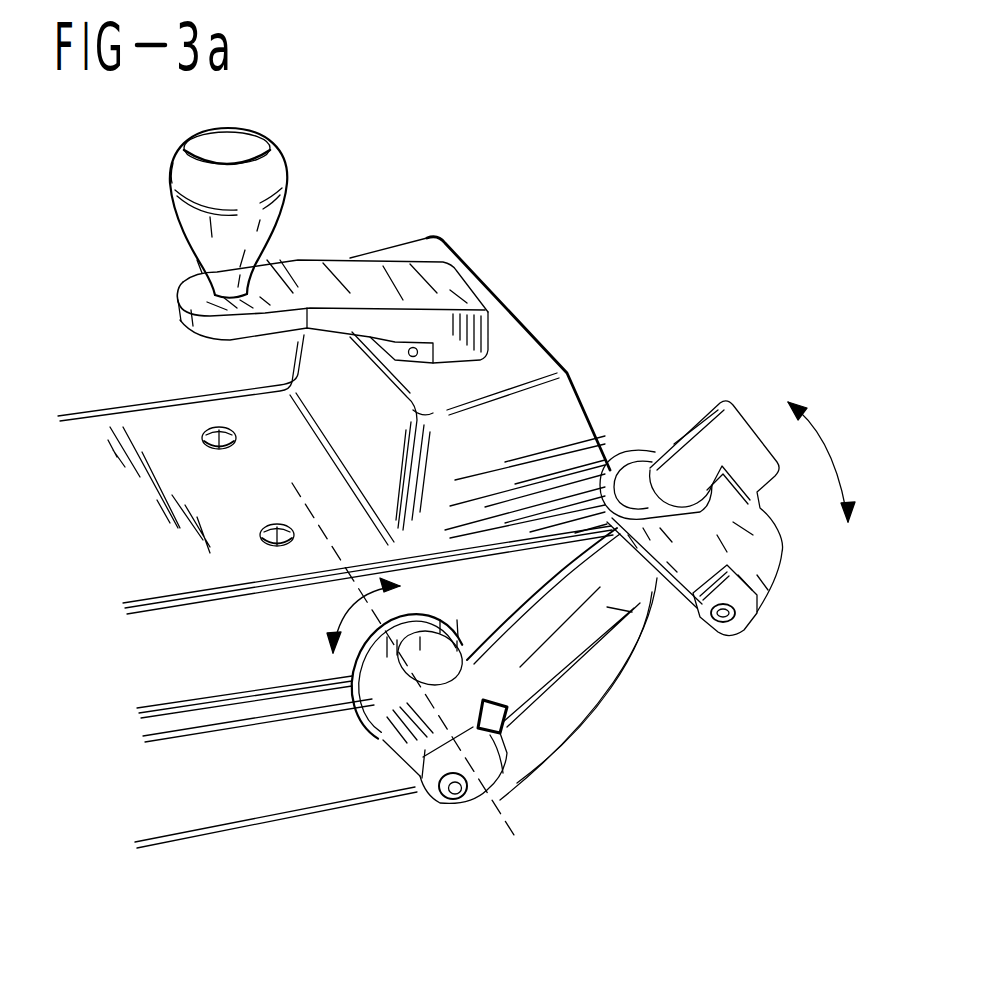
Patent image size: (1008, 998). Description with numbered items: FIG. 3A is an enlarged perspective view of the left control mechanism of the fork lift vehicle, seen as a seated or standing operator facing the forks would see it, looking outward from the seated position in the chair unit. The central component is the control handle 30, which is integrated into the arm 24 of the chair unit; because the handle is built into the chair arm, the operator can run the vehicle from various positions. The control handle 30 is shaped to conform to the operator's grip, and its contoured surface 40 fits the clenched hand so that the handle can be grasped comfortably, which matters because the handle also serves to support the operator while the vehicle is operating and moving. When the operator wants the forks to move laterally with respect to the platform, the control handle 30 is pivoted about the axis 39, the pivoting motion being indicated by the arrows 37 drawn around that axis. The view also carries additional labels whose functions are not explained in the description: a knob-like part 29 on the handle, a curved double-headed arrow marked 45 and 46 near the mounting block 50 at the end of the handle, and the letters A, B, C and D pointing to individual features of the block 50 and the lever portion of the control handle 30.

The arm 24 is at (180, 398).
The handle knob 29 is at (288, 217).
The control handle 30 is at (524, 705).
The arrows 37 is at (345, 600).
The axis 39 is at (505, 816).
The contoured surface 40 is at (622, 660).
The pivot direction arrow 45 is at (815, 466).
The pivot direction arrow 46 is at (855, 531).
The pivot block 50 is at (767, 556).
The pivot pin hole A is at (727, 620).
The key B is at (507, 728).
The end hole C is at (455, 802).
The cap D is at (674, 444).